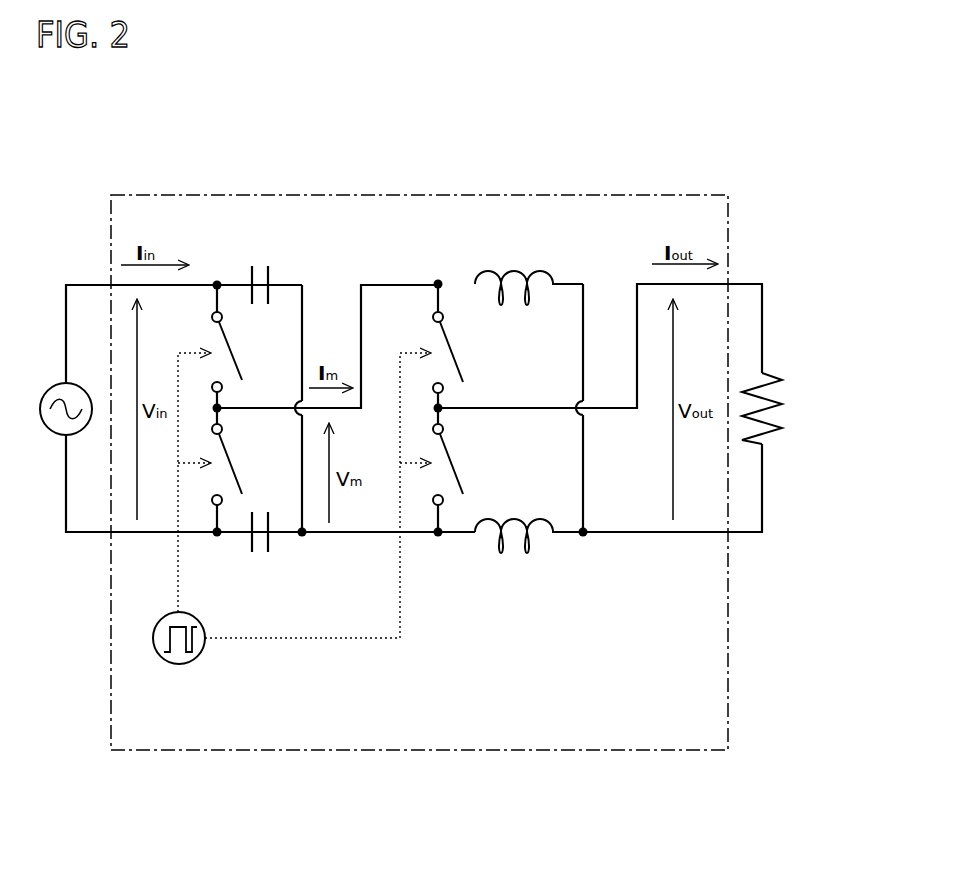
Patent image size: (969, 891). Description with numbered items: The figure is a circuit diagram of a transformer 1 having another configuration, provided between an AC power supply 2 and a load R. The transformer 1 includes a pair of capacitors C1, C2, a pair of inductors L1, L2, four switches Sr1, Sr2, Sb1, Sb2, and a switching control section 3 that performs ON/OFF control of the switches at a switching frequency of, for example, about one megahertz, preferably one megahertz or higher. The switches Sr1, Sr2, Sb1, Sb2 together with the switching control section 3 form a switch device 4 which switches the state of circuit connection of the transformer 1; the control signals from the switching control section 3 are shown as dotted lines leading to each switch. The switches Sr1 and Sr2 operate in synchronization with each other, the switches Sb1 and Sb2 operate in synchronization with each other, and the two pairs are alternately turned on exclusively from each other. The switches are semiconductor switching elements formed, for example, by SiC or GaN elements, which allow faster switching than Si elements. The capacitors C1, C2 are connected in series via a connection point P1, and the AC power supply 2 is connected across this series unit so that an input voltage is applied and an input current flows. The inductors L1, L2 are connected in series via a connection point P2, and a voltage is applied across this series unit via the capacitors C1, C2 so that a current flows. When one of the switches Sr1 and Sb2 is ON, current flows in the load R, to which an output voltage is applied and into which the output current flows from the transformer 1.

The transformer 1 is at (440, 195).
The AC power supply 2 is at (47, 389).
The switching control section 3 is at (177, 664).
The switch device 4 is at (222, 655).
The connection point P1 is at (304, 537).
The connection point P2 is at (585, 537).
The capacitor C1 is at (260, 274).
The capacitor C2 is at (260, 548).
The inductor L1 is at (529, 271).
The inductor L2 is at (529, 549).
The load R is at (776, 408).
The switch Sr1 is at (237, 346).
The switch Sb1 is at (238, 470).
The switch Sr2 is at (458, 346).
The switch Sb2 is at (459, 470).